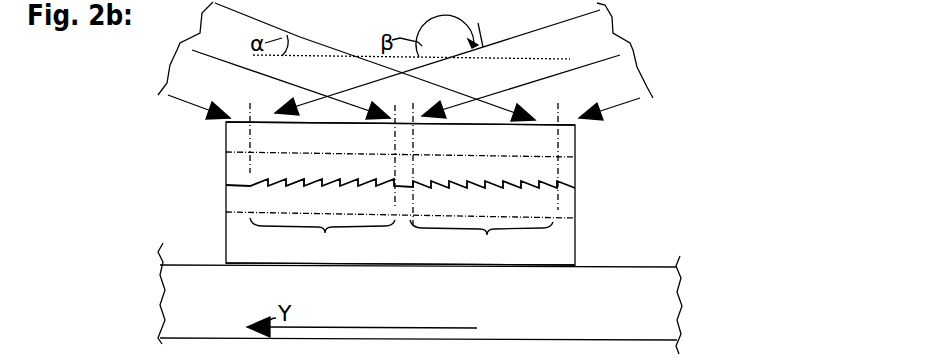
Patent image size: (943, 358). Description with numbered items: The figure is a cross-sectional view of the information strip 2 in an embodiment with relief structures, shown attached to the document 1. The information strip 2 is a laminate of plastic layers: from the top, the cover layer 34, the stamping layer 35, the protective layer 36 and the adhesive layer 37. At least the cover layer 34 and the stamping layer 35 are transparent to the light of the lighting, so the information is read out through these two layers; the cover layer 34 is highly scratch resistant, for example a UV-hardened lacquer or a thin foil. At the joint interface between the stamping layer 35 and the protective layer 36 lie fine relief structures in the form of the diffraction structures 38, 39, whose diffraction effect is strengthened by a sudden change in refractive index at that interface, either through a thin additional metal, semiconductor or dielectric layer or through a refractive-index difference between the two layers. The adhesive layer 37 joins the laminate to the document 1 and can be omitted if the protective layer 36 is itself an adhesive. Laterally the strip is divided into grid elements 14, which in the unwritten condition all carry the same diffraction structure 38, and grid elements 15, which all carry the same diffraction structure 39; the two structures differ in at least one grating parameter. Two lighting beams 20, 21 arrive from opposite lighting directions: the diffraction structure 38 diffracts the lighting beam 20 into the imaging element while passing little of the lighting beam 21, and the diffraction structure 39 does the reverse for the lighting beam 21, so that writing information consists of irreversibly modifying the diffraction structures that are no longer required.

The document 1 is at (596, 309).
The information strip 2 is at (226, 177).
The grid elements 14 is at (322, 240).
The grid elements 15 is at (481, 242).
The lighting beam 20 is at (339, 61).
The lighting beam 21 is at (474, 61).
The cover layer 34 is at (537, 142).
The stamping layer 35 is at (507, 163).
The protective layer 36 is at (495, 182).
The adhesive layer 37 is at (532, 260).
The diffraction structure 38 is at (297, 186).
The diffraction structure 39 is at (537, 207).